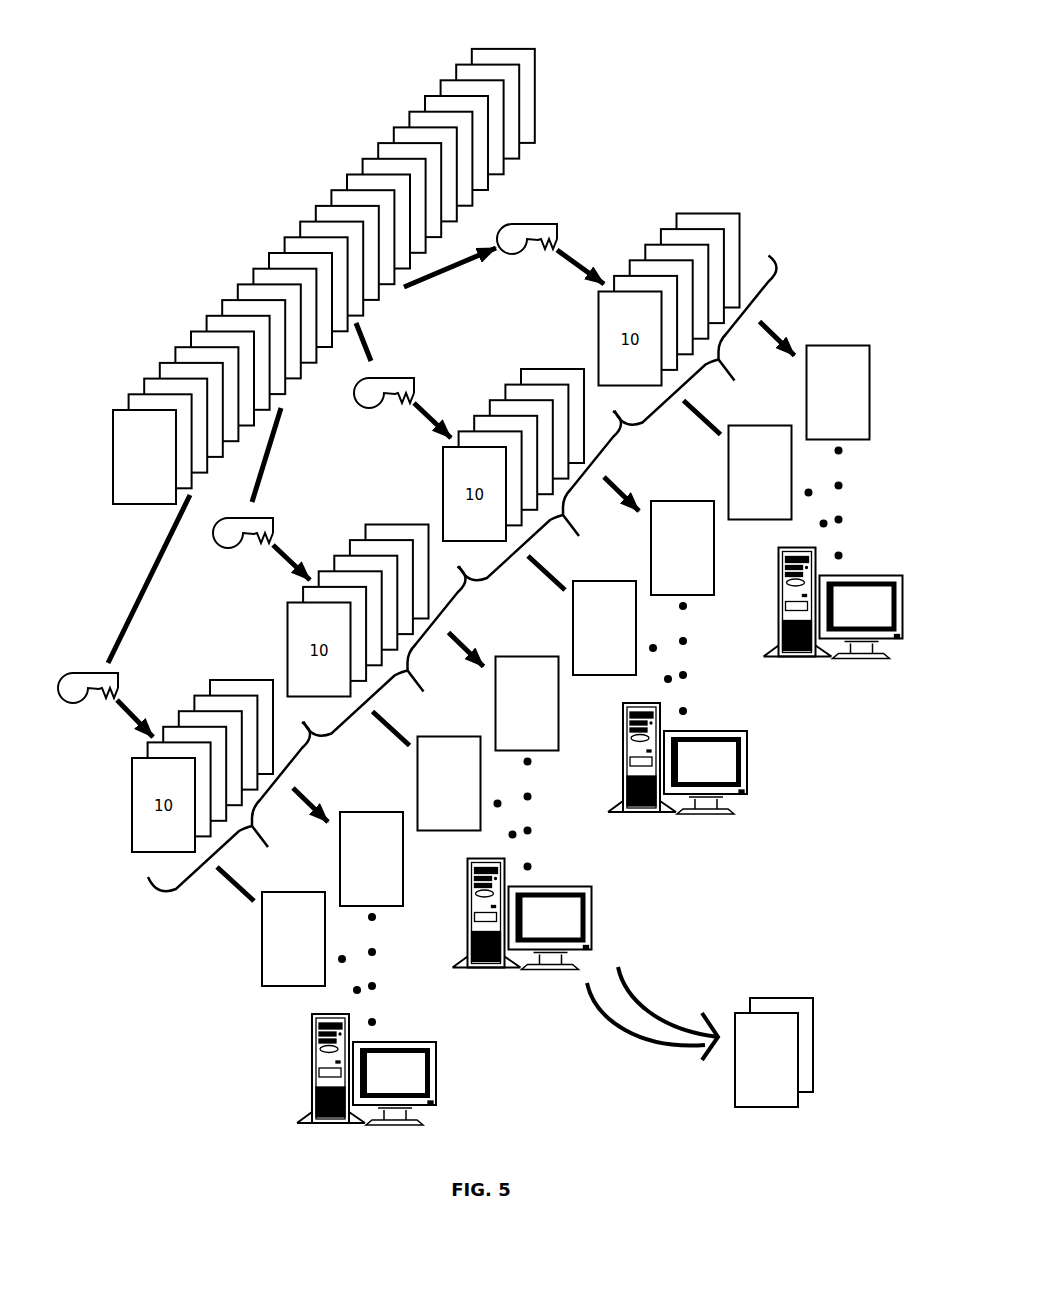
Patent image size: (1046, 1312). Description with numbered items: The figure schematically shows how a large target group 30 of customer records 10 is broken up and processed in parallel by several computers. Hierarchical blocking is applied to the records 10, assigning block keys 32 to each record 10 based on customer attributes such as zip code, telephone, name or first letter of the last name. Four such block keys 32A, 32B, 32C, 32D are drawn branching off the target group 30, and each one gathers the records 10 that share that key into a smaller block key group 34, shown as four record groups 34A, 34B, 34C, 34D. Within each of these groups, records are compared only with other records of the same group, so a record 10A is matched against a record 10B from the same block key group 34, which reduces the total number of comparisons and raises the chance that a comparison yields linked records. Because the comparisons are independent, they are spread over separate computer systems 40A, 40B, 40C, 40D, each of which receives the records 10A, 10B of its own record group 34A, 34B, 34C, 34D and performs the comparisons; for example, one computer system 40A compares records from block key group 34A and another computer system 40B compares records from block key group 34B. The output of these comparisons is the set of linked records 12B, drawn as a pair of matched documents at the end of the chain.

The record 10 is at (498, 167).
The record 10A is at (527, 706).
The record 10B is at (604, 686).
The linked records 12B is at (700, 1037).
The target group of records 30 is at (222, 272).
The block keys 32 is at (615, 153).
The block key 32A is at (76, 688).
The block key 32B is at (231, 533).
The block key 32C is at (372, 393).
The block key 32D is at (515, 239).
The block key groups 34 is at (763, 182).
The block key group 34A is at (238, 811).
The block key group 34B is at (394, 656).
The record group 34C is at (549, 500).
The record group 34D is at (705, 345).
The computer system 40A is at (372, 1133).
The computer system 40B is at (528, 978).
The computer system 40C is at (683, 822).
The computer system 40D is at (838, 666).